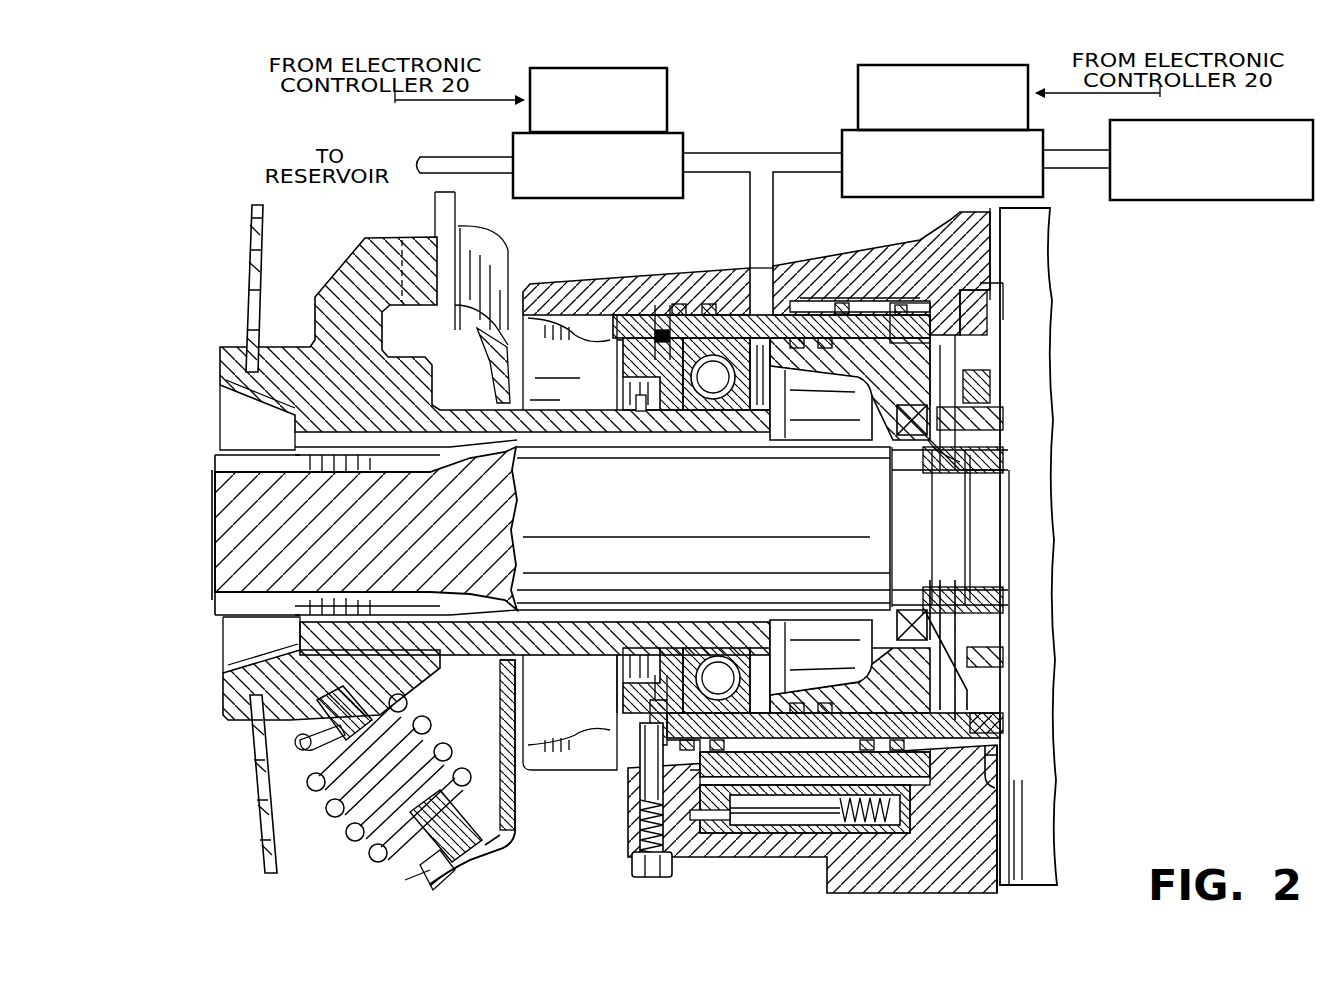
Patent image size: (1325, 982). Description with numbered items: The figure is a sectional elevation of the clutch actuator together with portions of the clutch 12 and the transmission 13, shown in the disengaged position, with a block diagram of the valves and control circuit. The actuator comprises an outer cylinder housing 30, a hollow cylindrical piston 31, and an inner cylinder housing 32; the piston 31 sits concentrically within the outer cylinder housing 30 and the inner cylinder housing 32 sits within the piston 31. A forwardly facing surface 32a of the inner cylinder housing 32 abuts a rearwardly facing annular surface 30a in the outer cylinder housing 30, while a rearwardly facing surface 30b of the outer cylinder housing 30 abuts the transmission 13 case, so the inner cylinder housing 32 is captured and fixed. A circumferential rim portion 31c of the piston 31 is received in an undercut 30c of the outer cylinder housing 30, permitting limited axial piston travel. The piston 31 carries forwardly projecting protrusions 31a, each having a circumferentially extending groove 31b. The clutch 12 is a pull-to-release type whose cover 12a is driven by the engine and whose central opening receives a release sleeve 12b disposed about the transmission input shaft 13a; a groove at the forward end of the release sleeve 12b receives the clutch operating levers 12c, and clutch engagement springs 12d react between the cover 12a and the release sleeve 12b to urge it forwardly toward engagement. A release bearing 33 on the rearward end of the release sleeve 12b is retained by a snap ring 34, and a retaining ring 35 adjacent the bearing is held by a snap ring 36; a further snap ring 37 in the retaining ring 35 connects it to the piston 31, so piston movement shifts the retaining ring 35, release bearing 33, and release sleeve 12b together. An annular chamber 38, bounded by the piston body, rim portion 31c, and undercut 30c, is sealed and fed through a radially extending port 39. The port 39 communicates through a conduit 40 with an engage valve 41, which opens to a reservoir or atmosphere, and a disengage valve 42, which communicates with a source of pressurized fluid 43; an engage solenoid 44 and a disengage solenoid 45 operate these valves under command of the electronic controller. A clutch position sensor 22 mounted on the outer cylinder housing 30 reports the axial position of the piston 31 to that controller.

The clutch 12 is at (300, 262).
The cover 12a is at (516, 826).
The release sleeve 12b is at (293, 347).
The clutch operating levers 12c is at (255, 212).
The clutch engagement springs 12d is at (348, 833).
The transmission 13 is at (1030, 332).
The transmission input shaft 13a is at (218, 556).
The clutch position sensor 22 is at (688, 870).
The outer cylinder housing 30 is at (560, 283).
The rearwardly facing annular surface 30a is at (1000, 757).
The rearwardly facing surface 30b is at (1000, 813).
The undercut 30c is at (803, 300).
The piston 31 is at (772, 708).
The axially forwardly projecting protrusions 31a is at (633, 333).
The circumferentially extending groove 31b is at (655, 716).
The circumferential rim portion 31c is at (898, 300).
The inner cylinder housing 32 is at (862, 398).
The forwardly facing surface 32a is at (967, 710).
The release bearing 33 is at (722, 405).
The snap ring 34 is at (770, 410).
The retaining ring 35 is at (620, 352).
The snap ring 36 is at (645, 415).
The snap ring 37 is at (657, 325).
The annular chamber 38 is at (832, 298).
The port 39 is at (750, 292).
The conduit 40 is at (765, 160).
The engage valve 41 is at (683, 140).
The disengage valve 42 is at (1040, 188).
The source of pressurized fluid 43 is at (1280, 205).
The engage solenoid 44 is at (668, 78).
The disengage solenoid 45 is at (858, 80).